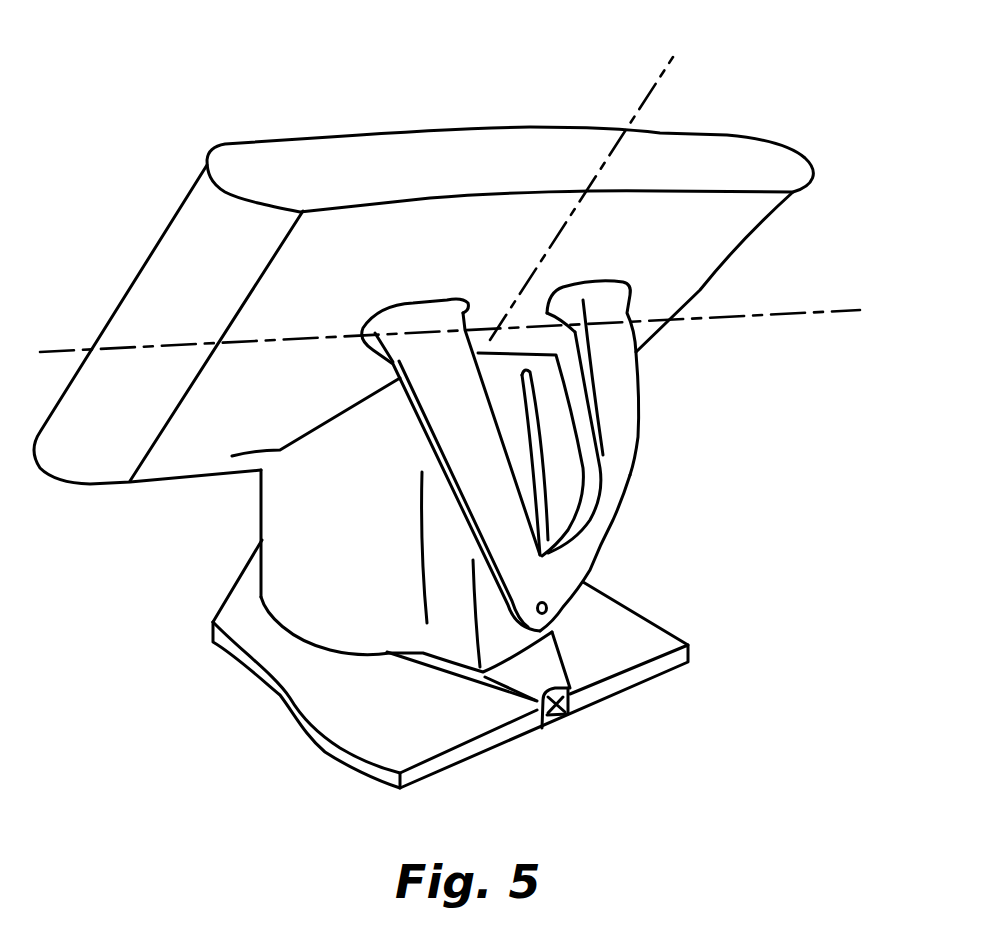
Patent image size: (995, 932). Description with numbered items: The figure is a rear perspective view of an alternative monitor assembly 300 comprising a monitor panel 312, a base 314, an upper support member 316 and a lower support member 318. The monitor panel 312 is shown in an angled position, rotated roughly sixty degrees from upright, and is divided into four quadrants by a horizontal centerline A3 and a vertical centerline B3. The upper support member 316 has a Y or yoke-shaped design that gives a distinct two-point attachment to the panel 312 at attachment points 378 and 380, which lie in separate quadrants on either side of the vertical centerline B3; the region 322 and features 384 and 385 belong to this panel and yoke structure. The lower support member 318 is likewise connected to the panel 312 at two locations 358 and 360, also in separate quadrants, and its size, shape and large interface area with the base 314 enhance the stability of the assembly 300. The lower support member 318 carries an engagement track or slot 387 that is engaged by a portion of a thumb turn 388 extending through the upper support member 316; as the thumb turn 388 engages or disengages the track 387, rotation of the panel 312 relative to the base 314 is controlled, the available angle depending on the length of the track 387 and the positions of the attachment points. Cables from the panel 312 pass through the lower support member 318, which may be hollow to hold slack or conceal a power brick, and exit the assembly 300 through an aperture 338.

The monitor assembly 300 is at (136, 136).
The monitor panel 312 is at (348, 128).
The side face of upper arm 322 is at (747, 212).
The attachment point 358 is at (232, 456).
The lower support member 318 is at (297, 580).
The base 314 is at (350, 722).
The aperture 338 is at (565, 712).
The upper support member 316 is at (650, 470).
The attachment point 378 is at (413, 307).
The flange of first arm 384 is at (437, 422).
The attachment point 380 is at (607, 278).
The lower portion of second arm 385 is at (590, 537).
The attachment point 360 is at (575, 403).
The engagement track 387 is at (547, 481).
The thumb turn 388 is at (548, 609).
The horizontal centerline A3 is at (812, 313).
The vertical centerline B3 is at (657, 77).